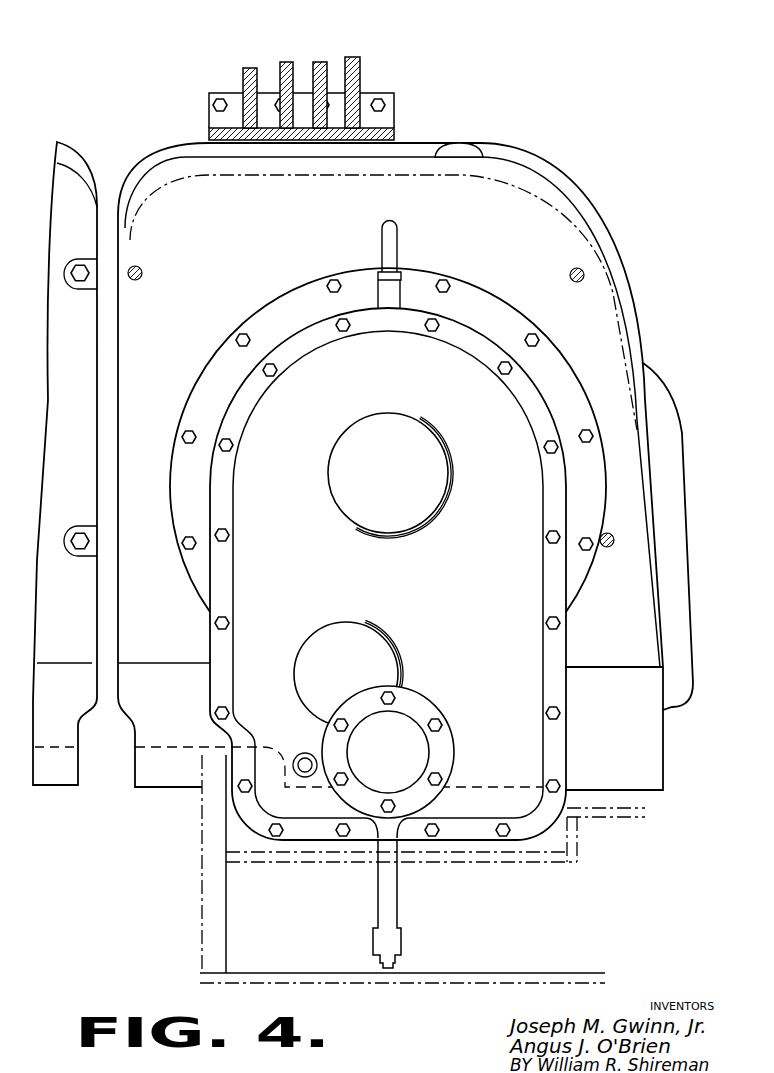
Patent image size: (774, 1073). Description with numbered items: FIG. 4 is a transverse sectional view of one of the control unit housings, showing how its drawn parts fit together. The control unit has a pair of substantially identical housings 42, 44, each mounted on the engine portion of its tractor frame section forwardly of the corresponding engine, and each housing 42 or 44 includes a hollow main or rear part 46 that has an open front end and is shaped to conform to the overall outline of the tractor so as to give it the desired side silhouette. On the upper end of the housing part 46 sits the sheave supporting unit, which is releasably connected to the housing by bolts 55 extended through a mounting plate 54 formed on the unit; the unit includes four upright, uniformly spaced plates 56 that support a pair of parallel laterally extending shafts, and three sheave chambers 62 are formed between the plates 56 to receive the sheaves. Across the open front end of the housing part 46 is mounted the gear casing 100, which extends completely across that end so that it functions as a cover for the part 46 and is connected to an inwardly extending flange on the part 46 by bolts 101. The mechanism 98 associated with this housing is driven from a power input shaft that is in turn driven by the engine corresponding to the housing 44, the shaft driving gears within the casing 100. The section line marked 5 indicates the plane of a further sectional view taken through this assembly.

The housing 42 is at (59, 368).
The housing 44 is at (597, 222).
The hollow main part 46 is at (533, 157).
The mounting plate 54 is at (210, 118).
The bolts 55 is at (230, 72).
The upright plates 56 is at (356, 58).
The sheave chambers 62 is at (263, 76).
The mechanism 98 is at (586, 605).
The gear casing 100 is at (515, 496).
The bolts 101 is at (233, 338).
The section line 5- 5 is at (392, 473).